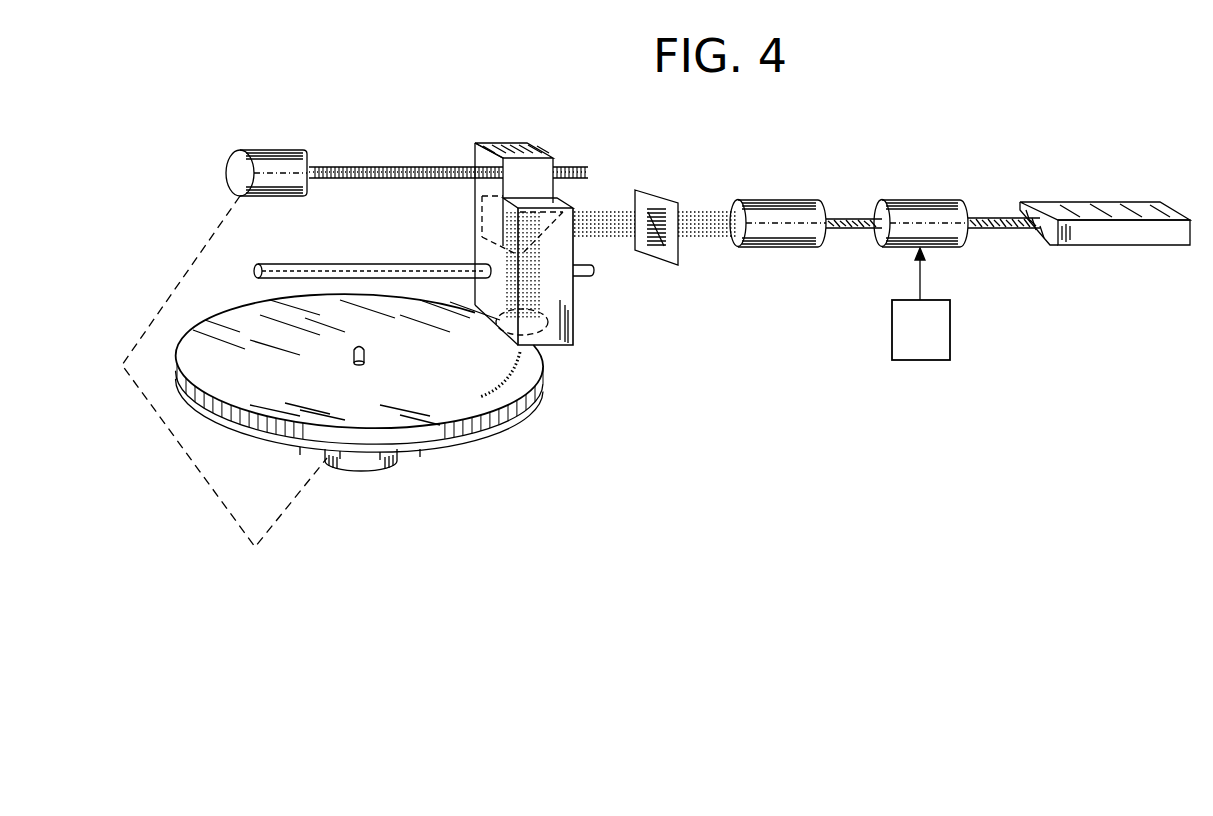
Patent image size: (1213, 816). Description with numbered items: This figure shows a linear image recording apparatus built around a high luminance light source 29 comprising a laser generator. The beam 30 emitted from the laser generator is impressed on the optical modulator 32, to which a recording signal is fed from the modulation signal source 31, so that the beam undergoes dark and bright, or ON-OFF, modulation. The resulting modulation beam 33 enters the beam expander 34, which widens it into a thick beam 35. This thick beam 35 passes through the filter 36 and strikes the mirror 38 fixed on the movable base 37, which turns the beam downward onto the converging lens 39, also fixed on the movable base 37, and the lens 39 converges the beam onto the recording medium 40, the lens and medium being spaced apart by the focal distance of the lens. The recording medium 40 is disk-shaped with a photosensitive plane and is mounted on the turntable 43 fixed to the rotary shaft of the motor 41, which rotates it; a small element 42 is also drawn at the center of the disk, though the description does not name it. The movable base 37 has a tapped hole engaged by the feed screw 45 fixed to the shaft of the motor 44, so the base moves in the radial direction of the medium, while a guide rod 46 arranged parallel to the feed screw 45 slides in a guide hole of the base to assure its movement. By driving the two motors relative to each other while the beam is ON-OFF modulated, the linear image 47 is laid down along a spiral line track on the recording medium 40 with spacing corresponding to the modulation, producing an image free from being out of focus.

The high luminance light source 29 is at (1112, 243).
The beam 30 is at (990, 230).
The modulation signal source 31 is at (912, 353).
The optical modulator 32 is at (920, 207).
The modulation beam 33 is at (846, 215).
The beam expander 34 is at (775, 235).
The thick beam 35 is at (697, 207).
The filter 36 is at (650, 250).
The movable base 37 is at (507, 156).
The mirror 38 is at (483, 214).
The converging lens 39 is at (546, 321).
The recording medium 40 is at (420, 410).
The motor 41 is at (354, 466).
The centering pin 42 is at (366, 352).
The turntable 43 is at (478, 432).
The motor 44 is at (278, 160).
The feed screw 45 is at (387, 167).
The guide rod 46 is at (348, 264).
The linear image 47 is at (503, 378).